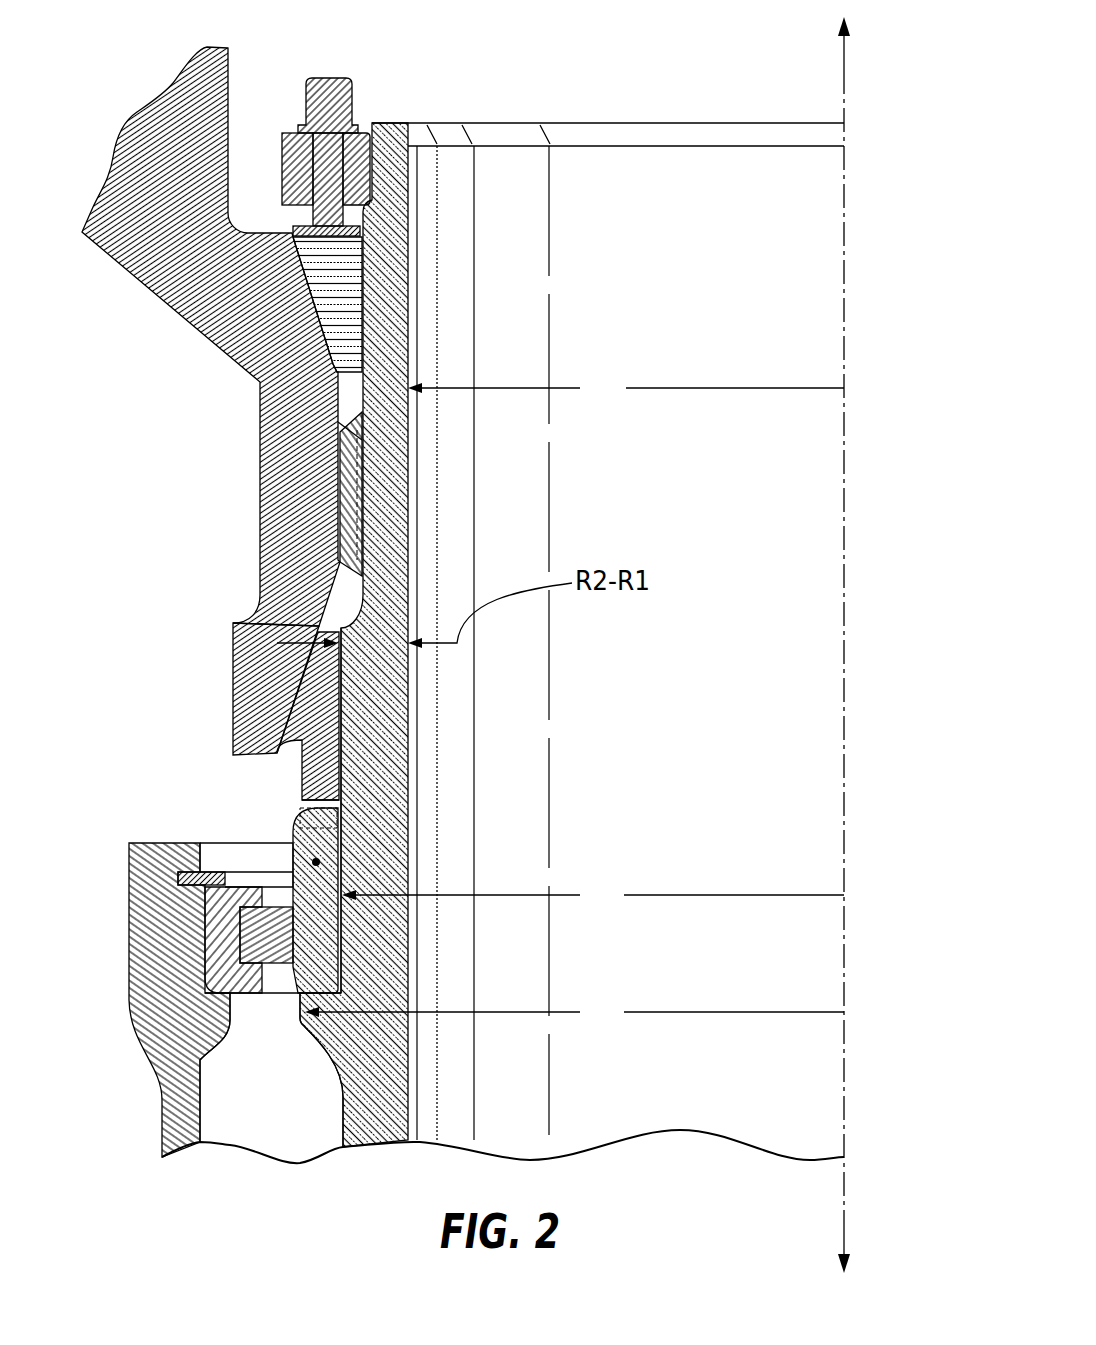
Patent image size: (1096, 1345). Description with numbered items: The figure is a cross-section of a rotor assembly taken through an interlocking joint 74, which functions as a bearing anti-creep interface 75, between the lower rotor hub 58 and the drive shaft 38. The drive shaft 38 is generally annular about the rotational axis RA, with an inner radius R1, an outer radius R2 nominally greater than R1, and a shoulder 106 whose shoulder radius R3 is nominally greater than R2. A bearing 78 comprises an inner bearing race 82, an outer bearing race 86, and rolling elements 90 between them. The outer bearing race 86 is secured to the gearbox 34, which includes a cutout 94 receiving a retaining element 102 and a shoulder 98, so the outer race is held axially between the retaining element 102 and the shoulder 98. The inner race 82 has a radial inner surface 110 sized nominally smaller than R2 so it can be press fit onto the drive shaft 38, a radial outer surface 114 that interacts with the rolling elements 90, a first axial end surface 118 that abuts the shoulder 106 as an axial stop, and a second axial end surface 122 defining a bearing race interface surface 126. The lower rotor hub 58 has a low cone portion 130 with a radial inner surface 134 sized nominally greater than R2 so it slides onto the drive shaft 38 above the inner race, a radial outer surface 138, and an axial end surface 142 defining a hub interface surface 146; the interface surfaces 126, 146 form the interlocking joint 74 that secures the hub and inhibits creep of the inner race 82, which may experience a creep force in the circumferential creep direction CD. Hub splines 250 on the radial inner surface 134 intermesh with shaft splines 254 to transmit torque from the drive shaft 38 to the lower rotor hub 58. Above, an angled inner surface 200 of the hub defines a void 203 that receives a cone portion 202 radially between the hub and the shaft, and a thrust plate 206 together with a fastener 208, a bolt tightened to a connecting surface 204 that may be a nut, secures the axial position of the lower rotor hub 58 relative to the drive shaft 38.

The lower rotor hub 58 is at (185, 150).
The drive shaft 38 is at (412, 182).
The angled inner surface 200 is at (307, 276).
The cone portion 202 is at (307, 276).
The void 203 is at (312, 299).
The fastener 208 is at (337, 85).
The connecting surface 204 is at (352, 162).
The thrust plate 206 is at (360, 228).
The hub spline 250 is at (236, 493).
The shaft spline 254 is at (329, 490).
The low cone portion 130 is at (205, 681).
The radial outer surface 138 is at (221, 678).
The radial inner surface 134 is at (352, 722).
The axial end surface 142 is at (212, 743).
The hub interface surface 146 is at (300, 818).
The radial inner surface 110 is at (342, 880).
The creep direction CD is at (320, 860).
The interlocking joint 74 is at (431, 773).
The bearing anti-creep interface 75 is at (345, 795).
The second axial end surface 122 is at (491, 810).
The bearing race interface surface 126 is at (362, 785).
The radial outer surface 114 is at (285, 876).
The retaining element 102 is at (213, 872).
The bearing 78 is at (243, 856).
The cutout 94 is at (177, 878).
The gearbox 34 is at (160, 918).
The outer bearing race 86 is at (180, 999).
The rolling element 90 is at (262, 940).
The shoulder 98 is at (212, 986).
The inner bearing race 82 is at (205, 1066).
The shoulder 106 is at (205, 1098).
The first axial end surface 118 is at (342, 1000).
The inner radius R1 is at (626, 386).
The outer radius R2 is at (593, 895).
The shoulder radius R3 is at (574, 1012).
The rotational axis RA is at (844, 50).